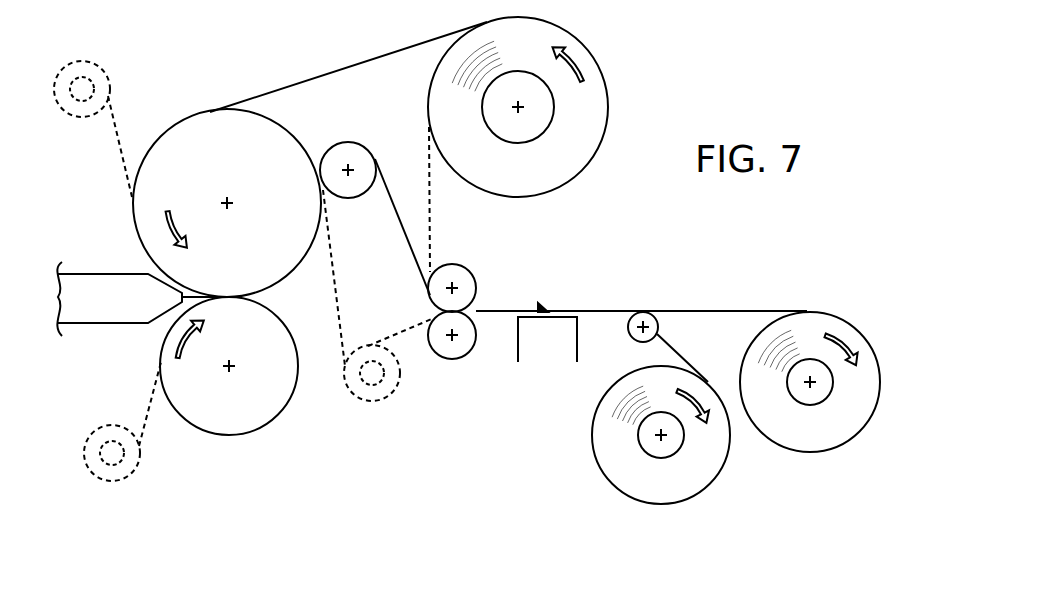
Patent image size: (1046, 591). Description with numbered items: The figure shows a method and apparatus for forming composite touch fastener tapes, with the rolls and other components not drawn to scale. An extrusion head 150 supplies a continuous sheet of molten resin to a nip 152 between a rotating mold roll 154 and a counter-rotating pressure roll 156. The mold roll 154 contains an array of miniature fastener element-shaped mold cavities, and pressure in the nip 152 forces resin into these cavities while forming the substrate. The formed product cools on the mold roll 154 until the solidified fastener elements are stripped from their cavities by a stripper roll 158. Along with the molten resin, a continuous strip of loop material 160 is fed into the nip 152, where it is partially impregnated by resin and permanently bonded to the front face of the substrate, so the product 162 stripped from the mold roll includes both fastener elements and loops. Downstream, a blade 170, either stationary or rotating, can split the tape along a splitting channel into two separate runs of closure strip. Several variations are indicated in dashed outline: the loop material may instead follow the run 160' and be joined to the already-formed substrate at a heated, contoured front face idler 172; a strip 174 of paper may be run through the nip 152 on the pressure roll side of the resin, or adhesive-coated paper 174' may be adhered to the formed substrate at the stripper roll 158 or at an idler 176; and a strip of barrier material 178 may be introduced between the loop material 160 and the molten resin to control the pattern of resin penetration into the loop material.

The extrusion head 150 is at (93, 312).
The nip 152 is at (253, 298).
The mold roll 154 is at (210, 259).
The pressure roll 156 is at (209, 417).
The stripper roll 158 is at (357, 199).
The loop material 160 is at (348, 67).
The run of loop material 160' is at (467, 199).
The product 162 is at (385, 178).
The blade 170 is at (559, 306).
The front face idler 172 is at (473, 278).
The strip of paper 174 is at (120, 421).
The adhesive-coated paper 174' is at (378, 295).
The idler 176 is at (453, 360).
The barrier material 178 is at (120, 151).